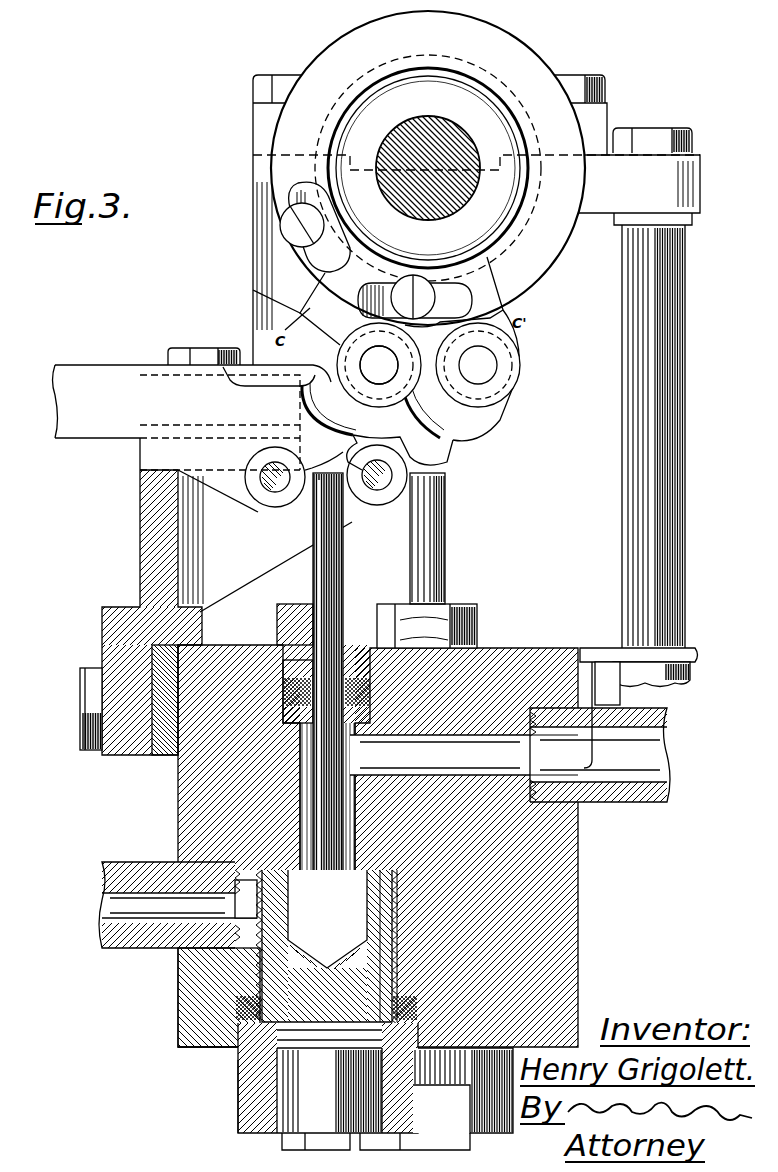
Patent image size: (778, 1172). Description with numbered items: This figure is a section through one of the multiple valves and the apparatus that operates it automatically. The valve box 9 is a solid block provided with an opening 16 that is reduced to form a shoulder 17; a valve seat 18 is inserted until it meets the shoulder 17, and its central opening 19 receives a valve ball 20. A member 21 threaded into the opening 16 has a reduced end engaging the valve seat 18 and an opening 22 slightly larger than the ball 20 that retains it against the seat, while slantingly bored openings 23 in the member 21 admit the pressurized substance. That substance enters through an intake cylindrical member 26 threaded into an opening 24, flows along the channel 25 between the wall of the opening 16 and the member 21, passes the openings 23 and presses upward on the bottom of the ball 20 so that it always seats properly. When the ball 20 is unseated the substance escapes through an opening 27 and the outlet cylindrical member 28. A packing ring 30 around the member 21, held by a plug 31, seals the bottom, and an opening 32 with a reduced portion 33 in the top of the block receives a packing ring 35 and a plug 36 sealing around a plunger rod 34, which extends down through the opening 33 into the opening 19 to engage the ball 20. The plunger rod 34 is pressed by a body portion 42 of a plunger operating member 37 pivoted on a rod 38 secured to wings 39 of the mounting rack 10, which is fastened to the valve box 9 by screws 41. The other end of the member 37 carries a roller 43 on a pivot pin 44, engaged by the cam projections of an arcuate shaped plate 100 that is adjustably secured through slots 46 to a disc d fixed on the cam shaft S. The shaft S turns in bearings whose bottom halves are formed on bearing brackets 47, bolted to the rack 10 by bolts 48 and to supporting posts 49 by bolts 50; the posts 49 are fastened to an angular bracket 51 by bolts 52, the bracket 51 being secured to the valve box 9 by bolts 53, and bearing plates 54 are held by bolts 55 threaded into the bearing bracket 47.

The valve box 9 is at (505, 648).
The mounting rack 10 is at (140, 545).
The opening 16 is at (206, 1048).
The shoulder 17 is at (300, 775).
The valve seat 18 is at (258, 818).
The central opening 19 is at (300, 790).
The valve ball 20 is at (327, 920).
The member 21 is at (258, 1000).
The opening 22 is at (240, 1002).
The slantingly bored openings 23 is at (402, 928).
The opening 24 is at (182, 870).
The channel 25 is at (400, 890).
The intake cylindrical member 26 is at (118, 862).
The opening 27 is at (585, 800).
The outlet cylindrical member 28 is at (668, 722).
The packing ring 30 is at (236, 1048).
The plug 31 is at (240, 1105).
The opening 32 is at (300, 668).
The reduced portion 33 is at (295, 690).
The plunger rod 34 is at (343, 592).
The packing ring 35 is at (382, 628).
The plug 36 is at (287, 607).
The plunger operating member 37 is at (92, 366).
The rod 38 is at (268, 492).
The wings 39 is at (243, 575).
The screws 41 is at (92, 675).
The body portion 42 is at (360, 505).
The roller 43 is at (338, 352).
The pivot pin 44 is at (378, 368).
The slots 46 is at (298, 208).
The bearing brackets 47 is at (255, 254).
The bolts 48 is at (183, 350).
The supporting posts 49 is at (684, 408).
The bolts 50 is at (656, 134).
The angular bracket 51 is at (694, 648).
The bolts 52 is at (691, 672).
The bolts 53 is at (620, 692).
The bearing plates 54 is at (608, 118).
The bolts 55 is at (268, 76).
The arcuate shaped plate 100 is at (292, 190).
The disc d is at (502, 46).
The cam shaft S is at (430, 124).